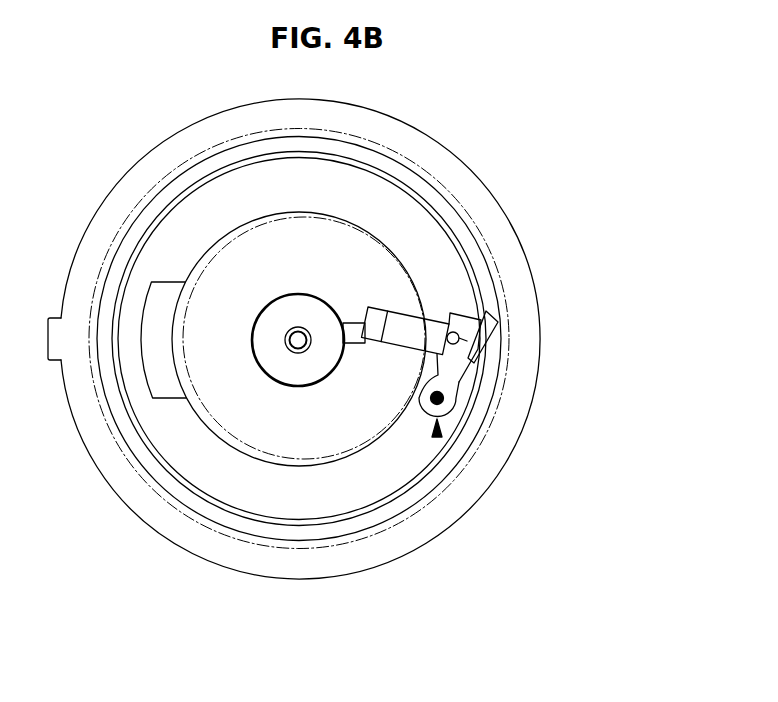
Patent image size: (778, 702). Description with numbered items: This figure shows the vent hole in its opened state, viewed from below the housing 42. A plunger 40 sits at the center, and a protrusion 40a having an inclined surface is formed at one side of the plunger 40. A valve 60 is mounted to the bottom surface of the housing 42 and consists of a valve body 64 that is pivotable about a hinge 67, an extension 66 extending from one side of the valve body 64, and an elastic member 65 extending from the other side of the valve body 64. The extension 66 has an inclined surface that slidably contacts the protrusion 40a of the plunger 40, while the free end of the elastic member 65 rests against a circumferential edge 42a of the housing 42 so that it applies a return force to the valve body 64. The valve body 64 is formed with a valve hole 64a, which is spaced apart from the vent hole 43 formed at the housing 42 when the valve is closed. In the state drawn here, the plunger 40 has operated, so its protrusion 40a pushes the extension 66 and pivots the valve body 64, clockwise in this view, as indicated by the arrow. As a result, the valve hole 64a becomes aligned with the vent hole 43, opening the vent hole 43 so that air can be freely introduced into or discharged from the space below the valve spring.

The plunger 40 is at (298, 368).
The protrusion 40a is at (357, 343).
The housing 42 is at (393, 215).
The circumferential edge 42a is at (460, 217).
The vent hole 43 is at (477, 345).
The valve 60 is at (437, 436).
The valve body 64 is at (455, 373).
The valve hole 64a is at (459, 334).
The elastic member 65 is at (492, 328).
The extension 66 is at (413, 321).
The hinge 67 is at (443, 400).